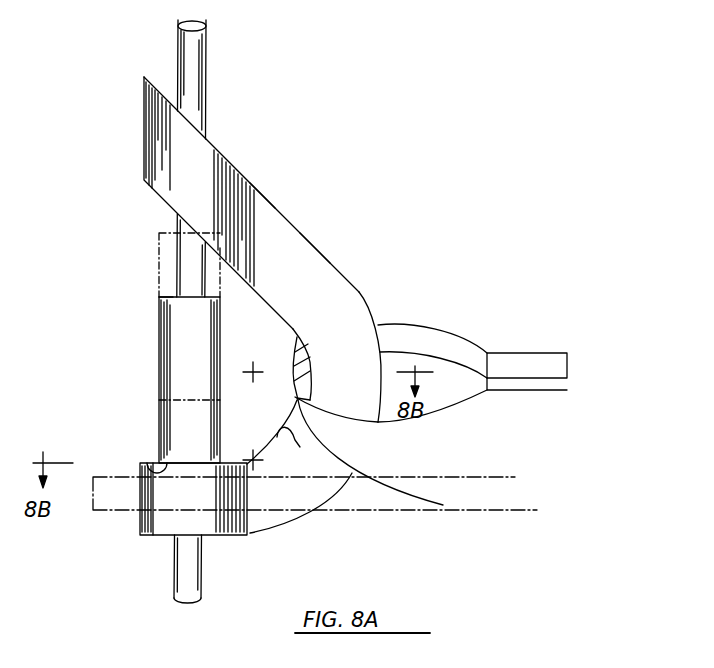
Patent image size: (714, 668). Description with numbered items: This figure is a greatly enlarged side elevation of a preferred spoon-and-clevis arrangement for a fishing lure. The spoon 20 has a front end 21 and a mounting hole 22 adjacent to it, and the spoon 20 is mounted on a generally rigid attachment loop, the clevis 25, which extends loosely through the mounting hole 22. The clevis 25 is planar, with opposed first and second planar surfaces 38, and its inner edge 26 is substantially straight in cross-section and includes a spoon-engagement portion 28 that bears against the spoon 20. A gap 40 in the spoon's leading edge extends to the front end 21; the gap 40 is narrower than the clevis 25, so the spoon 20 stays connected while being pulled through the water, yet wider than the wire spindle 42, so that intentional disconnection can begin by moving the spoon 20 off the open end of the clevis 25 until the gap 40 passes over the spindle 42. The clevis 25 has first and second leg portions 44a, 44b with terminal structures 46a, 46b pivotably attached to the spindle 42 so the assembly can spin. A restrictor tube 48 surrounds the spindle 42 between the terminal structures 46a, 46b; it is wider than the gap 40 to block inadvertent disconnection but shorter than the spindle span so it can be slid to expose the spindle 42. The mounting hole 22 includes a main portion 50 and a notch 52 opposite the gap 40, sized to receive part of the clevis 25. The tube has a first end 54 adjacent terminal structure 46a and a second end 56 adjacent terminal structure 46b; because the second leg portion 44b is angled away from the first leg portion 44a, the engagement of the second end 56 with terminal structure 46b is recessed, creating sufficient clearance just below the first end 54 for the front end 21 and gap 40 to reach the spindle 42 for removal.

The spoon 20 is at (362, 262).
The front end 21 is at (293, 352).
The mounting hole 22 is at (457, 370).
The clevis 25 is at (283, 515).
The inner edge 26 is at (277, 447).
The spoon-engagement portion 28 is at (272, 464).
The planar surface 38 is at (305, 250).
The gap 40 is at (297, 388).
The spindle 42 is at (180, 248).
The first clevis leg portion 44a is at (263, 520).
The second clevis leg portion 44b is at (277, 227).
The terminal structure of first leg portion 46a is at (152, 525).
The terminal structure of second leg portion 46b is at (157, 166).
The restrictor tube 48 is at (170, 356).
The main portion 50 is at (453, 395).
The notch 52 is at (545, 380).
The tube first end 54 is at (150, 462).
The tube second end 56 is at (167, 296).